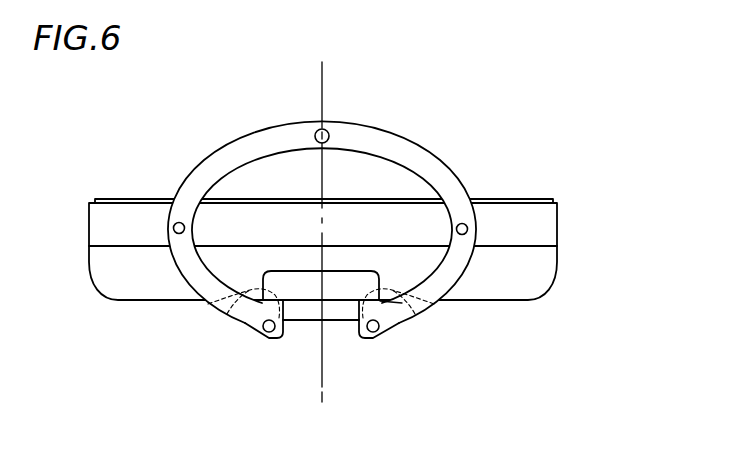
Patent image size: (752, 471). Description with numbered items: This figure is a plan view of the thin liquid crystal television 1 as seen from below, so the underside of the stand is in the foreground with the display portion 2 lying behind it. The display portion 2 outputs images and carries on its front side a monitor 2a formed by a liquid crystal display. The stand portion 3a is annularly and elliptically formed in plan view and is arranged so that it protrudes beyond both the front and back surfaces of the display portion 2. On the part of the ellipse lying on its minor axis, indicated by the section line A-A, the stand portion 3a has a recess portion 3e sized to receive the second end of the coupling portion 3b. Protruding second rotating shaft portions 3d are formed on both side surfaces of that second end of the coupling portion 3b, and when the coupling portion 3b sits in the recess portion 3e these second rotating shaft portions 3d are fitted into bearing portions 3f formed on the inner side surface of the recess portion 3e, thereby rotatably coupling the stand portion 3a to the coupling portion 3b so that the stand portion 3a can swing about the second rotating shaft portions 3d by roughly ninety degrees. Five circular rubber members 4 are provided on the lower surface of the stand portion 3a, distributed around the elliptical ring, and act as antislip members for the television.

The thin liquid crystal television 1 is at (606, 110).
The display portion 2 is at (547, 276).
The monitor 2a is at (539, 200).
The stand portion 3a is at (413, 154).
The coupling portion 3b is at (312, 300).
The second rotating shaft portions 3d is at (262, 302).
The recess portion 3e is at (285, 336).
The bearing portions 3f is at (227, 317).
The circular rubber members 4 is at (330, 137).